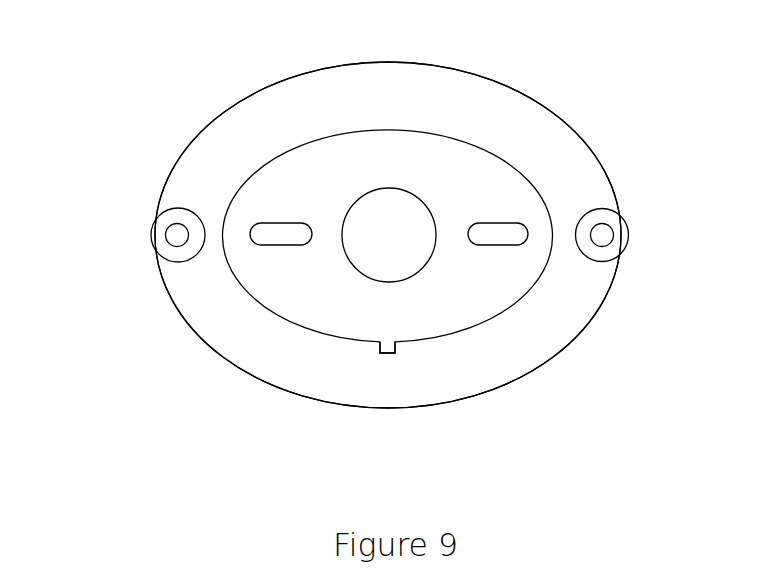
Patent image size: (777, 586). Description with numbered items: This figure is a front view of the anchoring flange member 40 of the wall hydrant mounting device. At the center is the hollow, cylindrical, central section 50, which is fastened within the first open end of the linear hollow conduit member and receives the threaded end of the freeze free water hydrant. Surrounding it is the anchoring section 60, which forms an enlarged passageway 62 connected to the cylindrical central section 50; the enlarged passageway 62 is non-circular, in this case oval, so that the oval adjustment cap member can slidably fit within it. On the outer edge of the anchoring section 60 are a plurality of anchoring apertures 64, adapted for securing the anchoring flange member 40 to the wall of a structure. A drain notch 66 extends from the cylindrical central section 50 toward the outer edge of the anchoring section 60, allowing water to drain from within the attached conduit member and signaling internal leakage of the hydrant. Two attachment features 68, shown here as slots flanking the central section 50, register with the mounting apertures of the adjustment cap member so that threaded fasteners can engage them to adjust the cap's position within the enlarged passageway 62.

The anchoring flange member 40 is at (388, 218).
The hollow cylindrical central section 50 is at (518, 189).
The anchoring section 60 is at (375, 212).
The enlarged passageway 62 is at (352, 289).
The anchoring apertures 64 is at (386, 236).
The drain notch 66 is at (439, 410).
The attachment features 68 is at (367, 332).